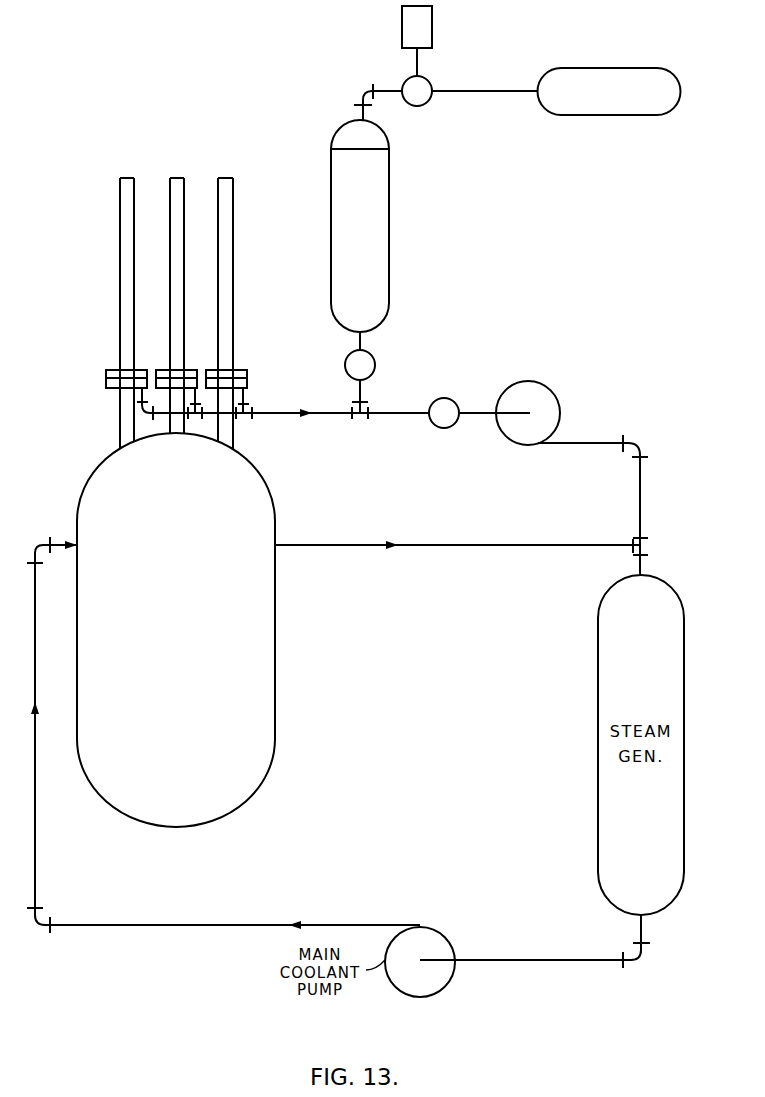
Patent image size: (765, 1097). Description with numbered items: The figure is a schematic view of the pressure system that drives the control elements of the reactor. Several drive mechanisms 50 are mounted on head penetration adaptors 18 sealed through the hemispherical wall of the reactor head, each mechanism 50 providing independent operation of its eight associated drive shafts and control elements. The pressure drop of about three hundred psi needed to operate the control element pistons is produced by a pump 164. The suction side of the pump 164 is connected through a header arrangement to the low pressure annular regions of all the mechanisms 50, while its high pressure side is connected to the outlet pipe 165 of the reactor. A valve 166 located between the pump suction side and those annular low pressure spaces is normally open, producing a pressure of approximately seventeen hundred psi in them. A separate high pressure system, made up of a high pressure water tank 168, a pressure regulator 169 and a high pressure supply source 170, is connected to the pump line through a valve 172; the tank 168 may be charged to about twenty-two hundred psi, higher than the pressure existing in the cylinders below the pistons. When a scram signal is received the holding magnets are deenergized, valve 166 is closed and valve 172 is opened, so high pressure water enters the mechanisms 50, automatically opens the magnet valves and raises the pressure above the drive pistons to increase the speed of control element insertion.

The head penetration adaptor 18 is at (120, 415).
The drive mechanism 50 is at (120, 295).
The pump 164 is at (552, 393).
The outlet pipe 165 is at (492, 547).
The valve 166 is at (446, 398).
The high pressure water tank 168 is at (389, 243).
The pressure regulator 169 is at (427, 102).
The high pressure supply source 170 is at (655, 116).
The valve 172 is at (372, 360).